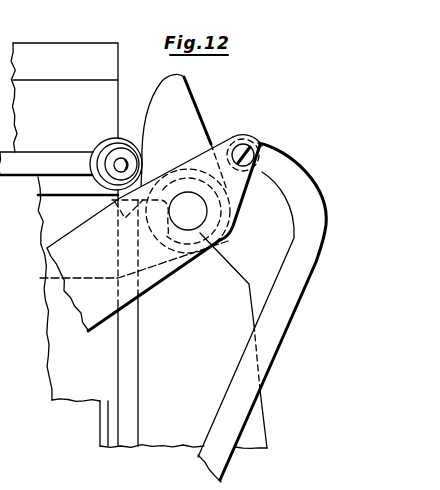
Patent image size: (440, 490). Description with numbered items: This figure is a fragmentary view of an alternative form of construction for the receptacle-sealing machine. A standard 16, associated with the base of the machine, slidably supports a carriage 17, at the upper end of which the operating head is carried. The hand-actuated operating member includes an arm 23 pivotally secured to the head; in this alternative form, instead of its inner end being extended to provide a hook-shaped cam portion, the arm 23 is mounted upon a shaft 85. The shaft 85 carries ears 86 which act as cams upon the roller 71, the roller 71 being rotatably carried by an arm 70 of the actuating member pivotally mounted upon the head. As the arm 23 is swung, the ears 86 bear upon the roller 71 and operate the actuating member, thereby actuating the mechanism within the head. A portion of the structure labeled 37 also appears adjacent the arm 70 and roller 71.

The standard 16 is at (153, 324).
The carriage 17 is at (78, 311).
The arm 23 is at (153, 234).
The block 37 is at (64, 121).
The arm 70 is at (75, 166).
The roller 71 is at (107, 138).
The shaft 85 is at (197, 213).
The ear 86 is at (190, 117).